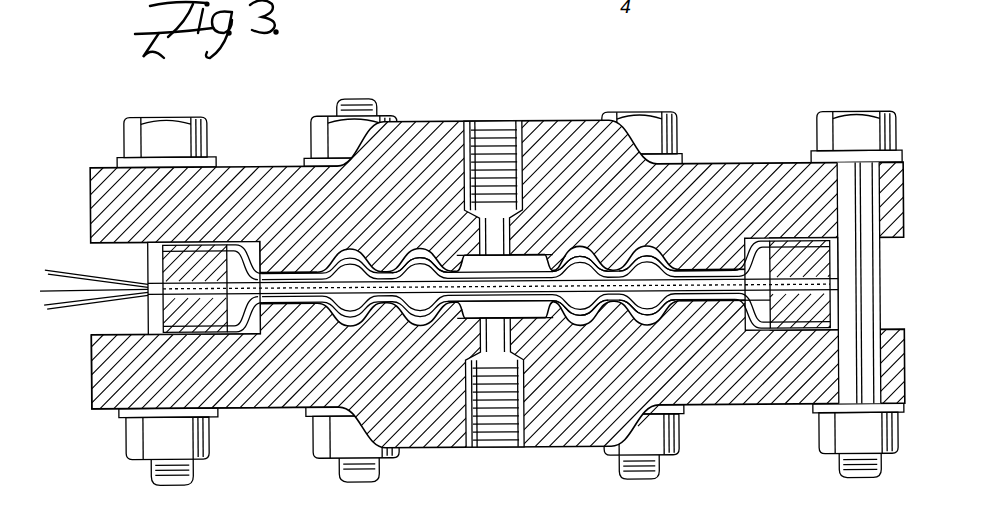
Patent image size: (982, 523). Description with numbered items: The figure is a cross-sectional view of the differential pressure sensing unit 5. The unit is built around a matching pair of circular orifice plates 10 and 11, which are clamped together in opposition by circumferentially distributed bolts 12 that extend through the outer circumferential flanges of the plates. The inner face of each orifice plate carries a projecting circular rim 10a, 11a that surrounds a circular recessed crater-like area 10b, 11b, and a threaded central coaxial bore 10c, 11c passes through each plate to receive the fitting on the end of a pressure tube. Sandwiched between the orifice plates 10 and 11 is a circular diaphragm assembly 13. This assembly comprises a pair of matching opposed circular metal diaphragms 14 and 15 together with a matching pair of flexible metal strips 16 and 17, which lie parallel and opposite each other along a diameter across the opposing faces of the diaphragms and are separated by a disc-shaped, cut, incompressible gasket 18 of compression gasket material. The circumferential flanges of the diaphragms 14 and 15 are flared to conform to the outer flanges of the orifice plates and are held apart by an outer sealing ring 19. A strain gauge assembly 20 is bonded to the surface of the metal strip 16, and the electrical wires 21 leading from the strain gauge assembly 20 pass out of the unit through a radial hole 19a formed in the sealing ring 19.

The differential pressure sensing unit 5 is at (420, 462).
The orifice plate 10 is at (263, 397).
The projecting circular rim 10a is at (720, 307).
The circular recessed crater-like area 10b is at (455, 320).
The threaded central coaxial bore 10c is at (518, 437).
The orifice plate 11 is at (772, 136).
The projecting circular rim 11a is at (292, 262).
The circular recessed crater-like area 11b is at (540, 253).
The threaded central coaxial bore 11c is at (514, 133).
The bolts 12 is at (148, 257).
The circular diaphragm assembly 13 is at (467, 262).
The circular metal diaphragm 14 is at (578, 303).
The circular metal diaphragm 15 is at (626, 250).
The flexible metal strip 16 is at (650, 306).
The flexible metal strip 17 is at (677, 258).
The gasket 18 is at (720, 264).
The outer sealing ring 19 is at (820, 264).
The radial hole 19a is at (196, 296).
The strain gauge assembly 20 is at (531, 303).
The electrical wires 21 is at (375, 281).